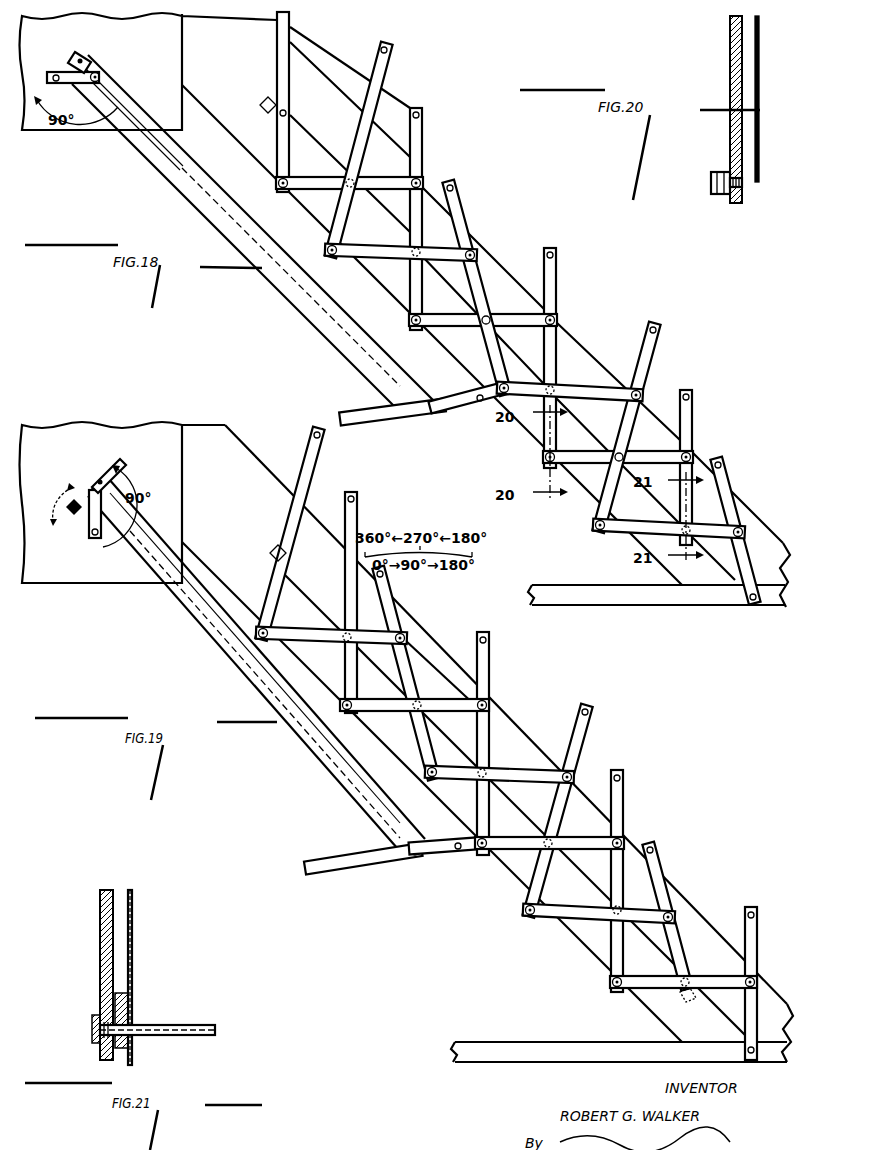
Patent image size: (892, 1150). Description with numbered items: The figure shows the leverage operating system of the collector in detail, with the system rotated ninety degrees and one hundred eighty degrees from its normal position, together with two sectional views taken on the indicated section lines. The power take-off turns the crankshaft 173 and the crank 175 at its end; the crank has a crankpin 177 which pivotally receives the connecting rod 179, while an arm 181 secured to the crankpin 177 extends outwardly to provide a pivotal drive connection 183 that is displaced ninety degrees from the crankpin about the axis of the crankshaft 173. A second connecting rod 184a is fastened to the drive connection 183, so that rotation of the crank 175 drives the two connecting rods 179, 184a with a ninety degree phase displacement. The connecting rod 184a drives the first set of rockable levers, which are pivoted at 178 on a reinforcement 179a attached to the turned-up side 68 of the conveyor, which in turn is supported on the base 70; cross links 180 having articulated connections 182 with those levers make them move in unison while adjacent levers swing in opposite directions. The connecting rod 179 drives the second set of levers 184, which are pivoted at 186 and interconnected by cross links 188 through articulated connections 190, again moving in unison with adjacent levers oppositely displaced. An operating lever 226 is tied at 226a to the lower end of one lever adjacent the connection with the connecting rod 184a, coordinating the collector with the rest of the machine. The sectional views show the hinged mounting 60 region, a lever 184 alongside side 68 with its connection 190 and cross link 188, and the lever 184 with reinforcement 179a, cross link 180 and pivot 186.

In FIG. 18, the hinge bracket 60 is at (106, 59).
In FIG. 19, the hinge bracket 60 is at (124, 470).
In FIG. 18, the turned up side 68 is at (598, 361).
In FIG. 19, the turned up side 68 is at (242, 442).
In FIG. 20, the turned up side 68 is at (760, 98).
In FIG. 21, the turned up side 68 is at (133, 945).
In FIG. 18, the base 70 is at (622, 597).
In FIG. 19, the base 70 is at (520, 1048).
In FIG. 18, the crankshaft 173 is at (99, 56).
In FIG. 19, the crankshaft 173 is at (70, 538).
In FIG. 18, the crank 175 is at (96, 43).
In FIG. 19, the crank 175 is at (80, 540).
In FIG. 18, the crankpin 177 is at (50, 62).
In FIG. 19, the crankpin 177 is at (94, 540).
In FIG. 18, the pivot 178 is at (354, 179).
In FIG. 19, the pivot 178 is at (344, 640).
In FIG. 18, the connecting rod 179 is at (163, 178).
In FIG. 19, the connecting rod 179 is at (228, 668).
In FIG. 18, the reinforcement 179a is at (262, 100).
In FIG. 19, the reinforcement 179a is at (271, 553).
In FIG. 21, the reinforcement 179a is at (128, 992).
In FIG. 18, the cross link 180 is at (380, 250).
In FIG. 19, the cross link 180 is at (388, 707).
In FIG. 21, the cross link 180 is at (92, 1020).
In FIG. 18, the arm 181 is at (92, 63).
In FIG. 19, the arm 181 is at (93, 485).
In FIG. 18, the articulated connection 182 is at (327, 249).
In FIG. 19, the articulated connection 182 is at (343, 705).
In FIG. 18, the pivotal drive connection 183 is at (103, 81).
In FIG. 19, the pivotal drive connection 183 is at (97, 487).
In FIG. 18, the lever 184 is at (290, 17).
In FIG. 19, the lever 184 is at (312, 437).
In FIG. 20, the lever 184 is at (730, 70).
In FIG. 21, the lever 184 is at (100, 942).
In FIG. 18, the second connecting rod 184a is at (372, 350).
In FIG. 19, the second connecting rod 184a is at (355, 784).
In FIG. 18, the pivot 186 is at (288, 113).
In FIG. 19, the pivot 186 is at (421, 703).
In FIG. 21, the pivot 186 is at (108, 1046).
In FIG. 18, the cross link 188 is at (318, 186).
In FIG. 19, the cross link 188 is at (290, 645).
In FIG. 20, the cross link 188 is at (722, 193).
In FIG. 18, the articulated connection 190 is at (278, 183).
In FIG. 19, the articulated connection 190 is at (266, 630).
In FIG. 20, the articulated connection 190 is at (712, 180).
In FIG. 18, the operating lever 226 is at (362, 412).
In FIG. 19, the operating lever 226 is at (330, 860).
In FIG. 18, the tie connection 226a is at (476, 404).
In FIG. 19, the tie connection 226a is at (455, 853).